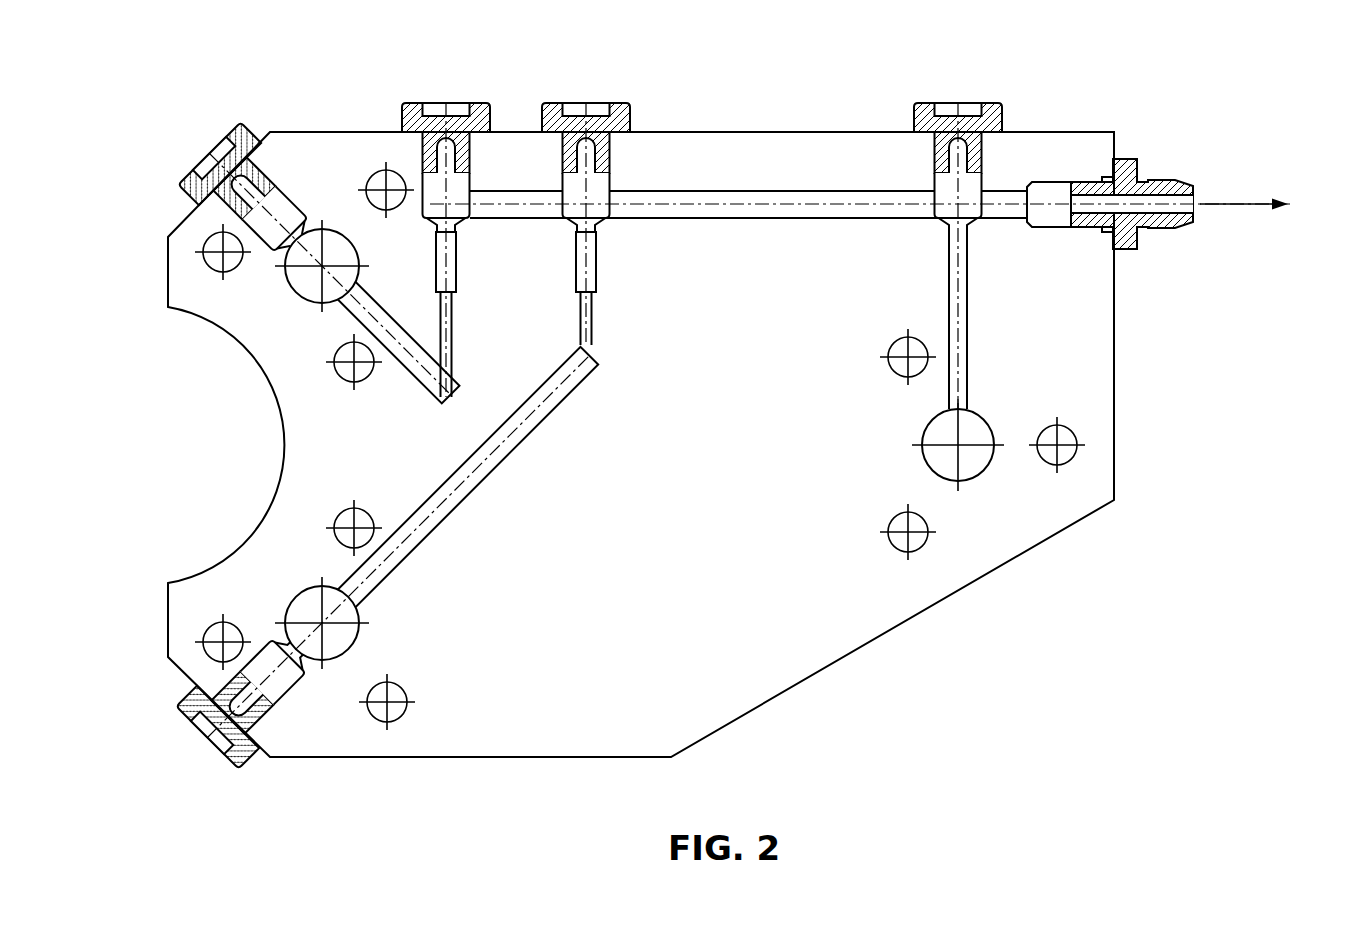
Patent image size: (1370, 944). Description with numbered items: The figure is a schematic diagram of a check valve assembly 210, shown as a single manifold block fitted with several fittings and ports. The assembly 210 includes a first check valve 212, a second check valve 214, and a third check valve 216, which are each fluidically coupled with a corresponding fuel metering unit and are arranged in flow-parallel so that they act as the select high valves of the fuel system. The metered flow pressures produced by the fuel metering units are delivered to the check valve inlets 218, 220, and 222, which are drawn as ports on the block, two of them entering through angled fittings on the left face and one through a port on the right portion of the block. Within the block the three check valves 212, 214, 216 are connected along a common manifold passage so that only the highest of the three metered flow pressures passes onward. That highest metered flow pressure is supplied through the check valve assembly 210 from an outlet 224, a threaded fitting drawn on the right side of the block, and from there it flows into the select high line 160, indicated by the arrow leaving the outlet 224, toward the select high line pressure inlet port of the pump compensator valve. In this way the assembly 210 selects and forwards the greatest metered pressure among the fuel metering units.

The select high line 160 is at (1273, 205).
The check valve assembly 210 is at (762, 706).
The first check valve 212 is at (426, 166).
The second check valve 214 is at (607, 166).
The third check valve 216 is at (983, 163).
The check valve inlet 218 is at (288, 287).
The check valve inlet 220 is at (290, 600).
The check valve inlet 222 is at (990, 463).
The outlet 224 is at (1195, 196).